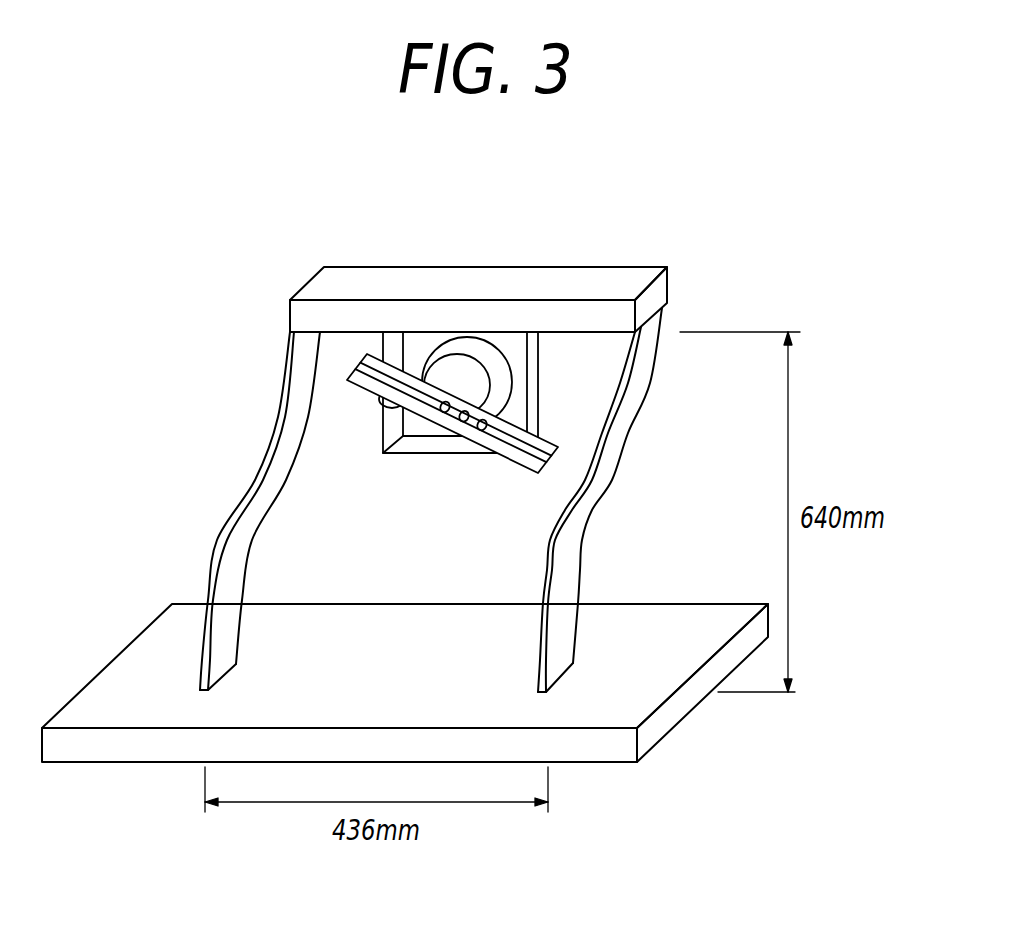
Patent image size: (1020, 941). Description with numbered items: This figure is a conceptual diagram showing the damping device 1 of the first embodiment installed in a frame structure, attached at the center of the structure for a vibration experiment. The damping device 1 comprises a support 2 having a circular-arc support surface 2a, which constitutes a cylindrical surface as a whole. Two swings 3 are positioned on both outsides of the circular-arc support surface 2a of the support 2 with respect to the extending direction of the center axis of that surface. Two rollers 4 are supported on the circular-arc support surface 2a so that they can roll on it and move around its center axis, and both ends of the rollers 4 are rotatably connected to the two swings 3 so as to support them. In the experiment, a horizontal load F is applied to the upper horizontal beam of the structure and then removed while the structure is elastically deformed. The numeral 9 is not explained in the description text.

The damping device 1 is at (435, 465).
The support 2 is at (518, 378).
The circular-arc support surface 2a is at (395, 403).
The swing 3 is at (545, 472).
The roller 4 is at (465, 395).
The test stand 9 is at (637, 265).
The horizontal load F is at (290, 332).